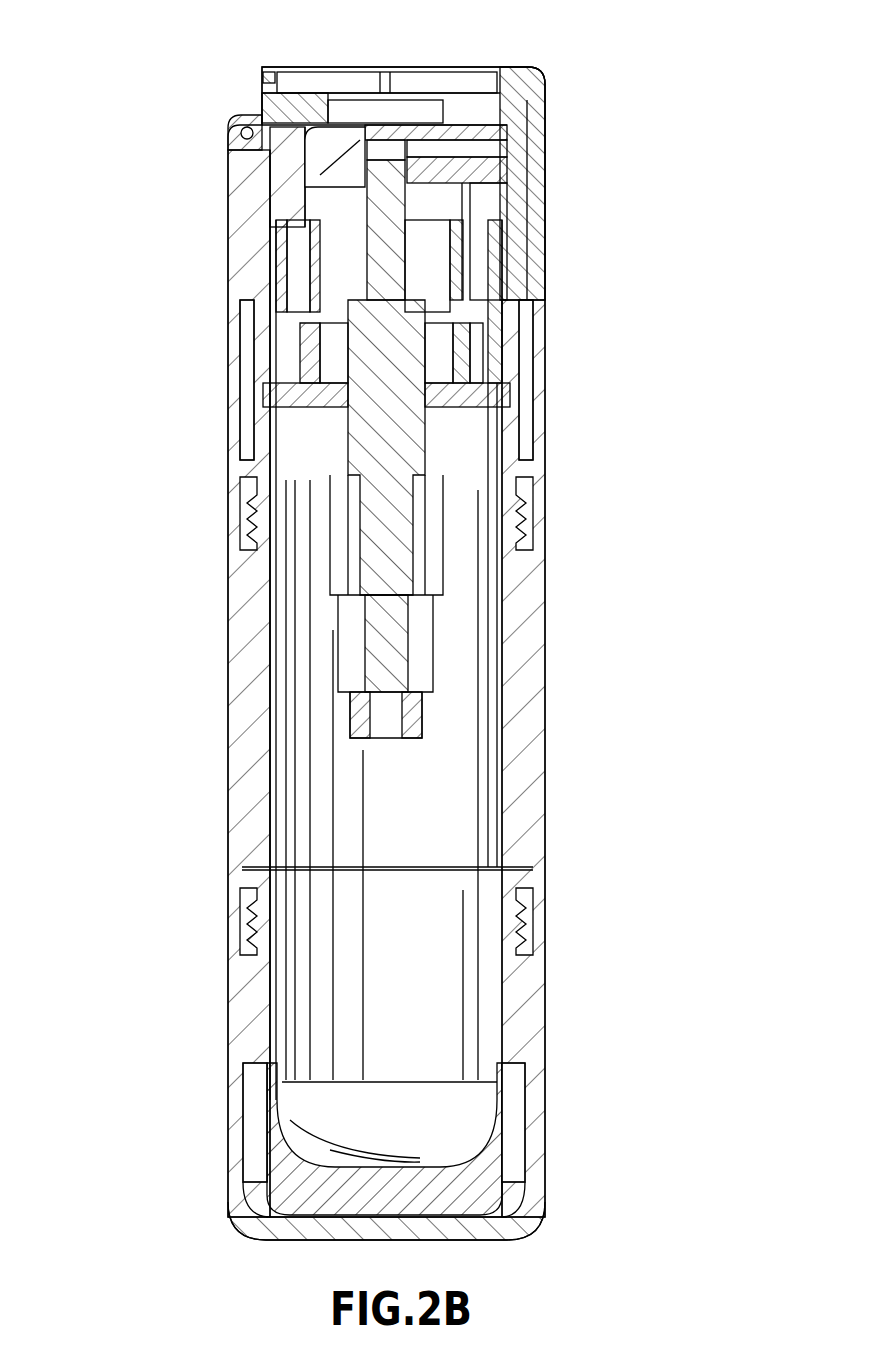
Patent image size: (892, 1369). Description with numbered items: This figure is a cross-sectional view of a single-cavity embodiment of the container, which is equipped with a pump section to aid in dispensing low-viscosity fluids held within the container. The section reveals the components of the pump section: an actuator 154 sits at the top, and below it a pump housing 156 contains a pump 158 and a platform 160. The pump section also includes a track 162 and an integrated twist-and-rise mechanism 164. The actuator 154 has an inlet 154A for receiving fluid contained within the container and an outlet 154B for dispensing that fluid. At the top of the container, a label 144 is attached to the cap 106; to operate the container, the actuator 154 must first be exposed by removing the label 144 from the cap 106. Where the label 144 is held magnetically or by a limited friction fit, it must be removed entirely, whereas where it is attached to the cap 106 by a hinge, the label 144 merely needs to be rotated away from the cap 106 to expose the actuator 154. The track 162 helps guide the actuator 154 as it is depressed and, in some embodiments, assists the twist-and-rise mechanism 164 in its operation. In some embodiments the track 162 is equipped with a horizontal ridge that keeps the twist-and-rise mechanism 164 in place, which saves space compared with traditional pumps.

The cap 106 is at (246, 100).
The label 144 is at (320, 67).
The actuator 154 is at (487, 132).
The inlet 154A is at (498, 147).
The outlet 154B is at (377, 172).
The pump housing 156 is at (546, 365).
The pump 158 is at (452, 316).
The platform 160 is at (488, 396).
The track 162 is at (440, 530).
The twist-and-rise mechanism 164 is at (278, 257).